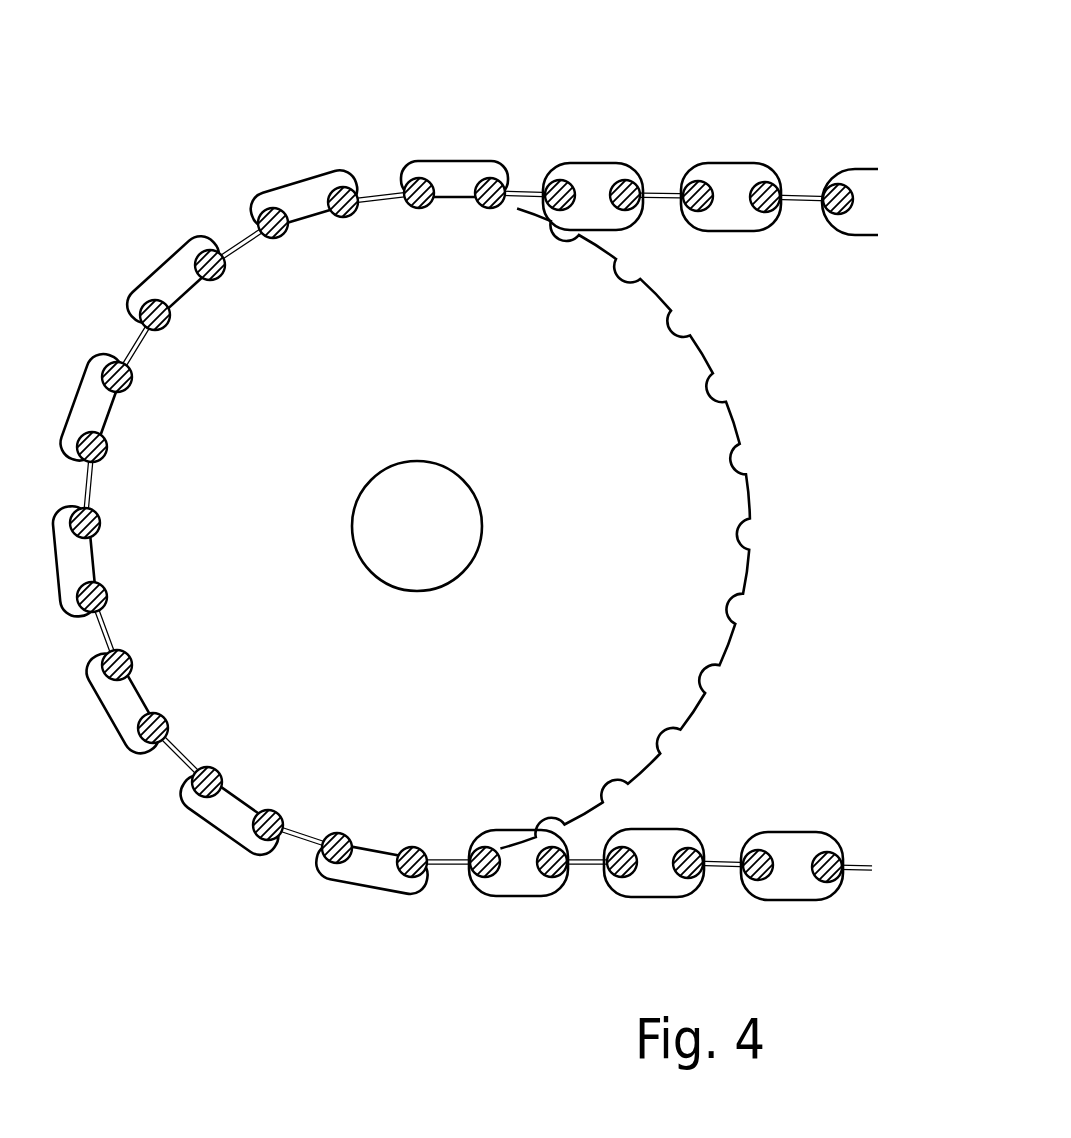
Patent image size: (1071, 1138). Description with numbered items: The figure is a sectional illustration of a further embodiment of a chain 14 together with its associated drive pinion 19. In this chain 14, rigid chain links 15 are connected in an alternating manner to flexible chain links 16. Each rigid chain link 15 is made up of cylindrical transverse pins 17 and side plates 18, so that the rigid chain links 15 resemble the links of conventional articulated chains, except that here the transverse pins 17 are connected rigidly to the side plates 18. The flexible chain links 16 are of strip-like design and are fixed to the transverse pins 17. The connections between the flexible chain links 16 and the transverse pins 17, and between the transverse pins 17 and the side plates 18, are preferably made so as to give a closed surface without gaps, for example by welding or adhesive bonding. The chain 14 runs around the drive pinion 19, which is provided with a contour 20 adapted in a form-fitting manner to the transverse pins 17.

The chain 14 is at (583, 139).
The rigid chain link 15 is at (732, 177).
The flexible chain link 16 is at (662, 195).
The transverse pin 17 is at (835, 192).
The side plate 18 is at (736, 213).
The drive pinion 19 is at (293, 299).
The contour 20 is at (676, 323).